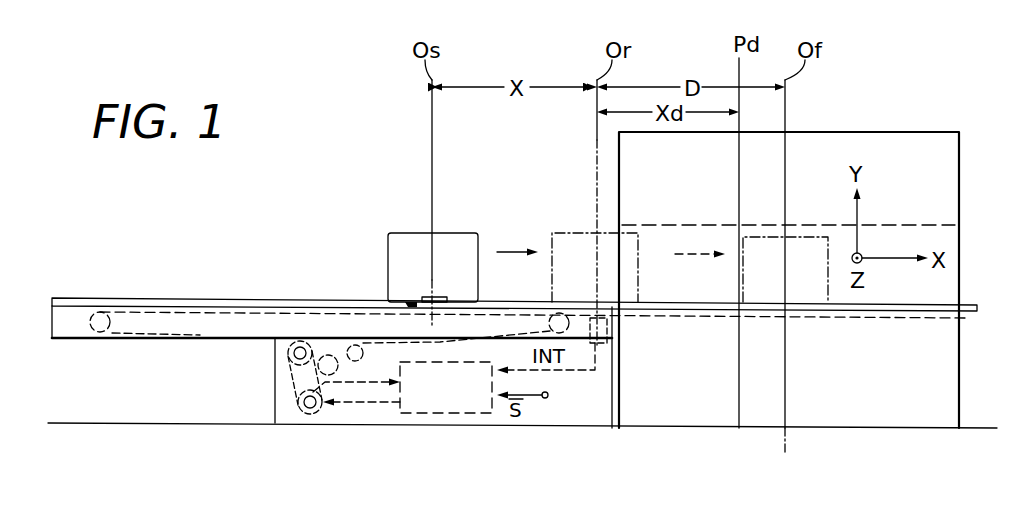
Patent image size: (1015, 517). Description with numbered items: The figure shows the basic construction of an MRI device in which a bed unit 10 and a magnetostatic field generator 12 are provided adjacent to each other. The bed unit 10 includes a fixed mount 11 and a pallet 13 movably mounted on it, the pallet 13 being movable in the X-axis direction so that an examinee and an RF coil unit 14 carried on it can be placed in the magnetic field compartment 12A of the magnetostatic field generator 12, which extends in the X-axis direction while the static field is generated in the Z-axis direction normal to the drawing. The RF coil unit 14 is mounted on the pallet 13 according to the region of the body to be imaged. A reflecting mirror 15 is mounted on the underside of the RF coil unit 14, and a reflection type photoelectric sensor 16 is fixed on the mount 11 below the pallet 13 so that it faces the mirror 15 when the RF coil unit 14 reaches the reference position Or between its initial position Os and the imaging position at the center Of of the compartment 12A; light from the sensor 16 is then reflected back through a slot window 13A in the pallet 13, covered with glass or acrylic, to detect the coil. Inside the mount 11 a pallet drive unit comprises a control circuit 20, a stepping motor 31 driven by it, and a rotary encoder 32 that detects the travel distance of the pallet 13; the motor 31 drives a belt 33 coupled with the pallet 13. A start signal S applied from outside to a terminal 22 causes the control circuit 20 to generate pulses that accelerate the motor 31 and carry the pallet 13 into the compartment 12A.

The bed unit 10 is at (380, 426).
The fixed mount 11 is at (528, 428).
The magnetostatic field generator 12 is at (848, 428).
The magnetic field compartment 12A is at (927, 227).
The pallet 13 is at (168, 299).
The slot window 13A is at (418, 302).
The RF coil unit 14 is at (410, 232).
The reflecting mirror 15 is at (436, 297).
The reflection type photoelectric sensor 16 is at (612, 331).
The control circuit 20 is at (446, 415).
The terminal 22 is at (549, 396).
The stepping motor 31 is at (303, 425).
The rotary encoder 32 is at (314, 413).
The belt 33 is at (208, 313).